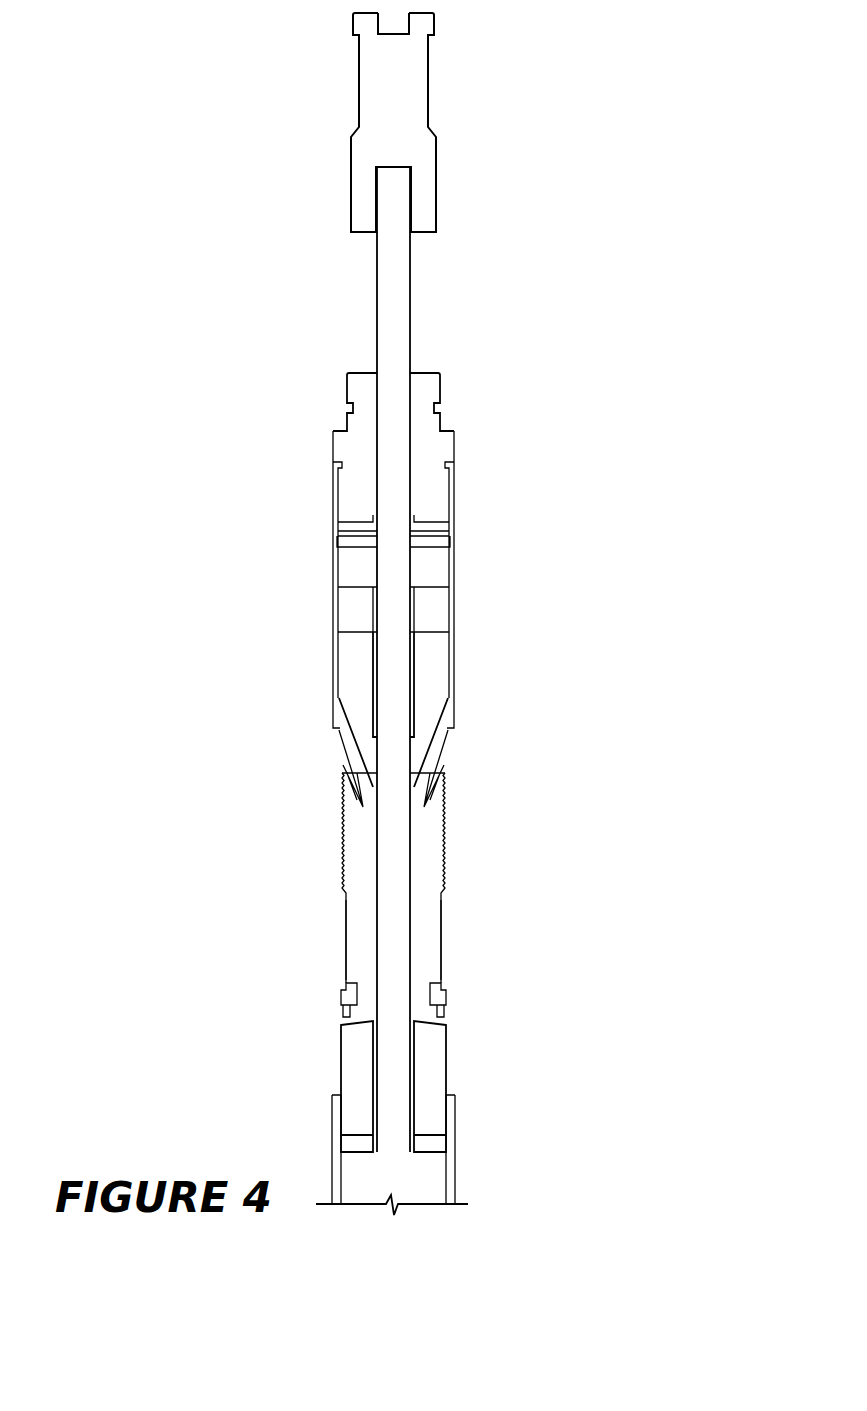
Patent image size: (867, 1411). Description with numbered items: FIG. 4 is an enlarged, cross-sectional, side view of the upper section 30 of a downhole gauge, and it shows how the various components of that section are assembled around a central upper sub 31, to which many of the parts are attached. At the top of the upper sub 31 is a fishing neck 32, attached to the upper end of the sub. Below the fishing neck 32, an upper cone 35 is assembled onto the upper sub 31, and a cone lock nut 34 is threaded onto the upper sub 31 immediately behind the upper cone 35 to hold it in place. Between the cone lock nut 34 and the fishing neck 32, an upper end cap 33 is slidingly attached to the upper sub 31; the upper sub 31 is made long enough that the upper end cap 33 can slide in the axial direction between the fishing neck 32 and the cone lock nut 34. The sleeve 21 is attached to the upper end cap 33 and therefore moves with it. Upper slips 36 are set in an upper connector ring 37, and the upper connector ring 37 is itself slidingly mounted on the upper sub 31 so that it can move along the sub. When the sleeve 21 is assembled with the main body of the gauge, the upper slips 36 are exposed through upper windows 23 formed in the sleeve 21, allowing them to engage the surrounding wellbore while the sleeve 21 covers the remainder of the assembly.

The sleeve 21 is at (335, 710).
The upper windows 23 is at (300, 934).
The upper section 30 is at (552, 548).
The upper sub 31 is at (404, 300).
The fishing neck 32 is at (420, 90).
The upper end cap 33 is at (443, 447).
The cone lock nut 34 is at (346, 610).
The upper cone 35 is at (436, 650).
The upper slips 36 is at (432, 848).
The upper connector ring 37 is at (437, 1045).